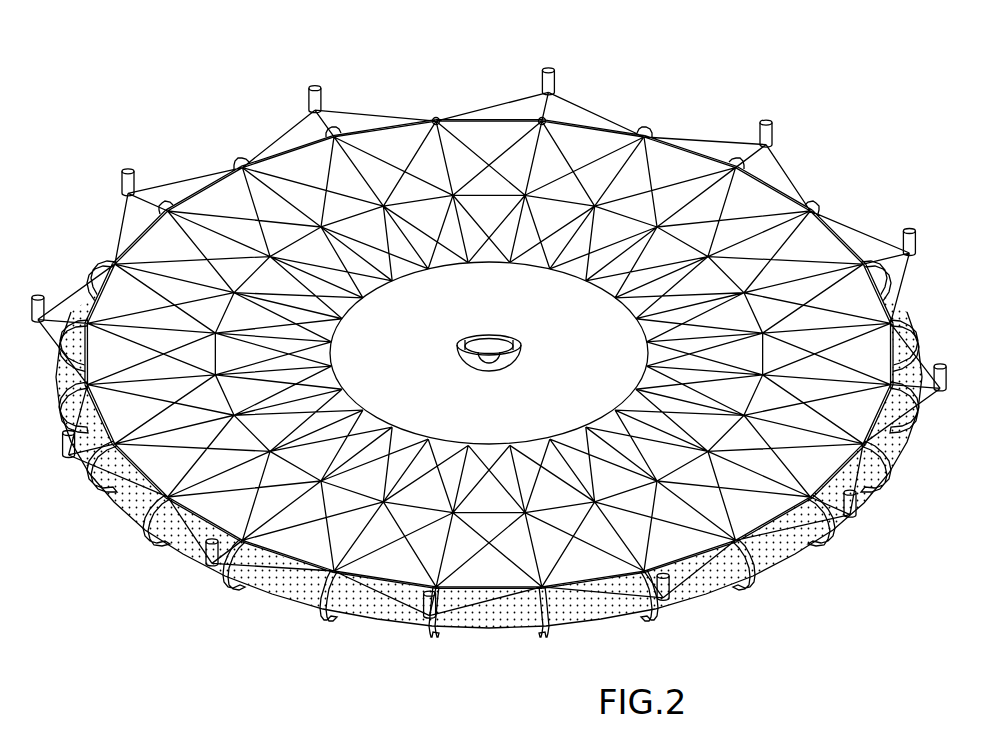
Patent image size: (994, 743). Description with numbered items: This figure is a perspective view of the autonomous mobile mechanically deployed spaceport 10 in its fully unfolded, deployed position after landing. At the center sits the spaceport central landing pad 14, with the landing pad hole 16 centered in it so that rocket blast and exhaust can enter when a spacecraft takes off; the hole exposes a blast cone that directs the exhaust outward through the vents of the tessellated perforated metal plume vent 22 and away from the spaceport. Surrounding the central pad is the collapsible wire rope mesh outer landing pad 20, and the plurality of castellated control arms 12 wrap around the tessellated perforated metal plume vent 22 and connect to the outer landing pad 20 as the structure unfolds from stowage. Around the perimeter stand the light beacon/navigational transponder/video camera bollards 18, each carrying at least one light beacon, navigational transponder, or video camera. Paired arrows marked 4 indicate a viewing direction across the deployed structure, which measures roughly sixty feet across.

The autonomous mobile mechanically deployed spaceport 10 is at (489, 354).
The castellated control arm 12 is at (330, 637).
The spaceport central landing pad 14 is at (500, 428).
The landing pad hole 16 is at (479, 346).
The light beacon/navigational transponder/video camera bollard 18 is at (306, 98).
The collapsible wire rope mesh outer landing pad 20 is at (497, 127).
The tessellated perforated metal plume vent 22 is at (502, 636).
The section line 4- 4 is at (838, 155).